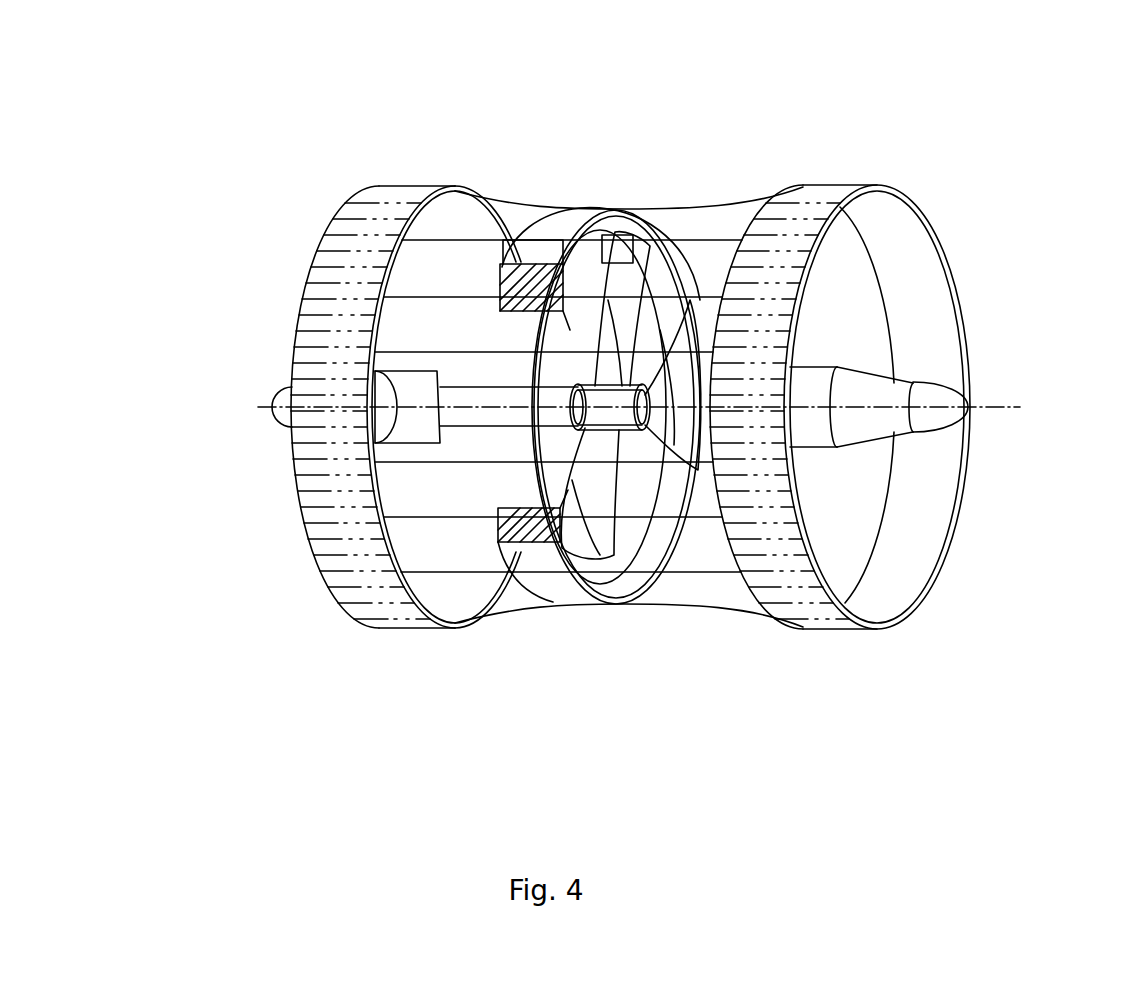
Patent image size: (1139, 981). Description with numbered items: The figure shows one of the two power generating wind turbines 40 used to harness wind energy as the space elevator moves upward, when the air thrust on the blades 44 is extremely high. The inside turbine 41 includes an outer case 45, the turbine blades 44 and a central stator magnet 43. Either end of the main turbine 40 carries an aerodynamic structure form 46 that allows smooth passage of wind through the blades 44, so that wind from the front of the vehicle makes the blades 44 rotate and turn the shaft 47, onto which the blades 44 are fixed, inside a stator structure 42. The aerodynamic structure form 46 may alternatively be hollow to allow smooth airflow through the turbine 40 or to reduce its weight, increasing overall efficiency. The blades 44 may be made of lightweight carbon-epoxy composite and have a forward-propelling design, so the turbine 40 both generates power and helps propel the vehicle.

The power generating wind turbine 40 is at (962, 186).
The inside turbine 41 is at (908, 408).
The stator structure 42 is at (907, 554).
The central stator magnet 43 is at (608, 578).
The turbine blades 44 is at (605, 292).
The outer case 45 is at (360, 572).
The aerodynamic structure form 46 is at (272, 407).
The shaft 47 is at (610, 440).